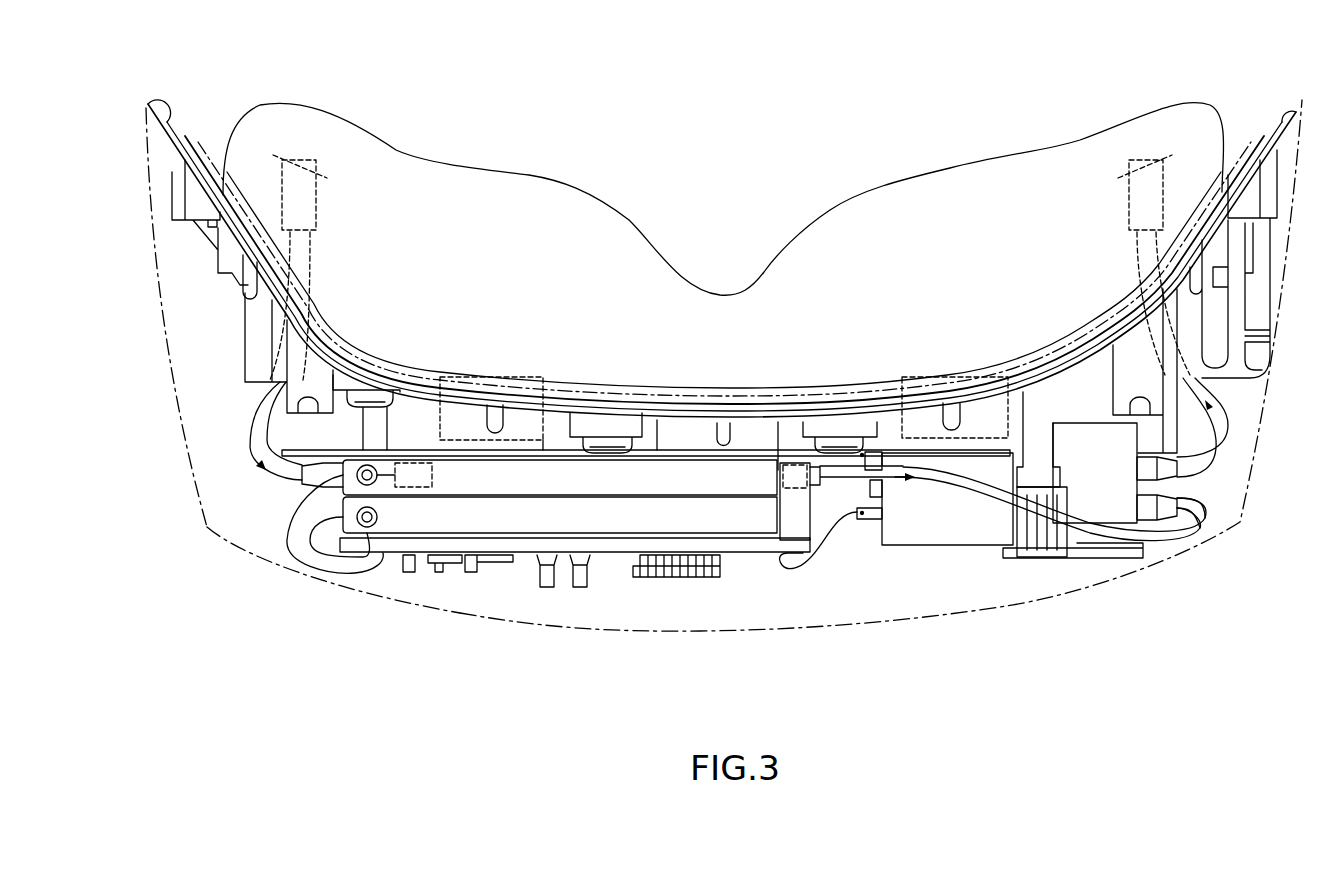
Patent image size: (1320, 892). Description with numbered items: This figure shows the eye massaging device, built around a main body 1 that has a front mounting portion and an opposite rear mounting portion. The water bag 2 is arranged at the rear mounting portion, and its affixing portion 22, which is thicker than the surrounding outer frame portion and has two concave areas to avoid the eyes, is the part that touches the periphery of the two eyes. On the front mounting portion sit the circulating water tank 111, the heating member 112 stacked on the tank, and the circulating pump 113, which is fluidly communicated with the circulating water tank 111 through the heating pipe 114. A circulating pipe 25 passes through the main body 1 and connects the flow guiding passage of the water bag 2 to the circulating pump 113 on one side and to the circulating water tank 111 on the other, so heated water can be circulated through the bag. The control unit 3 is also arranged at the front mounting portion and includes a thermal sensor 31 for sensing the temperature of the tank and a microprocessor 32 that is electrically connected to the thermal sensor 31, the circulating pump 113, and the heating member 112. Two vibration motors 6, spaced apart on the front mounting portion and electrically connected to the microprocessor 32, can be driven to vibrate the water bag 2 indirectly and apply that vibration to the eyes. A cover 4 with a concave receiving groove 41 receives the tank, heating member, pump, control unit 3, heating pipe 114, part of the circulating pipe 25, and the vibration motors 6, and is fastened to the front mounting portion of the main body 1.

The main body 1 is at (1255, 147).
The water bag 2 is at (1120, 102).
The affixing portion 22 is at (990, 167).
The cover 4 is at (200, 470).
The concave receiving groove 41 is at (222, 505).
The vibration motors 6 is at (523, 378).
The control unit 3 is at (512, 570).
The thermal sensor 31 is at (420, 483).
The microprocessor 32 is at (633, 572).
The heating member 112 is at (732, 525).
The circulating water tank 111 is at (750, 483).
The heating pipe 114 is at (940, 480).
The circulating pump 113 is at (1120, 518).
The circulating pipe 25 is at (1220, 453).